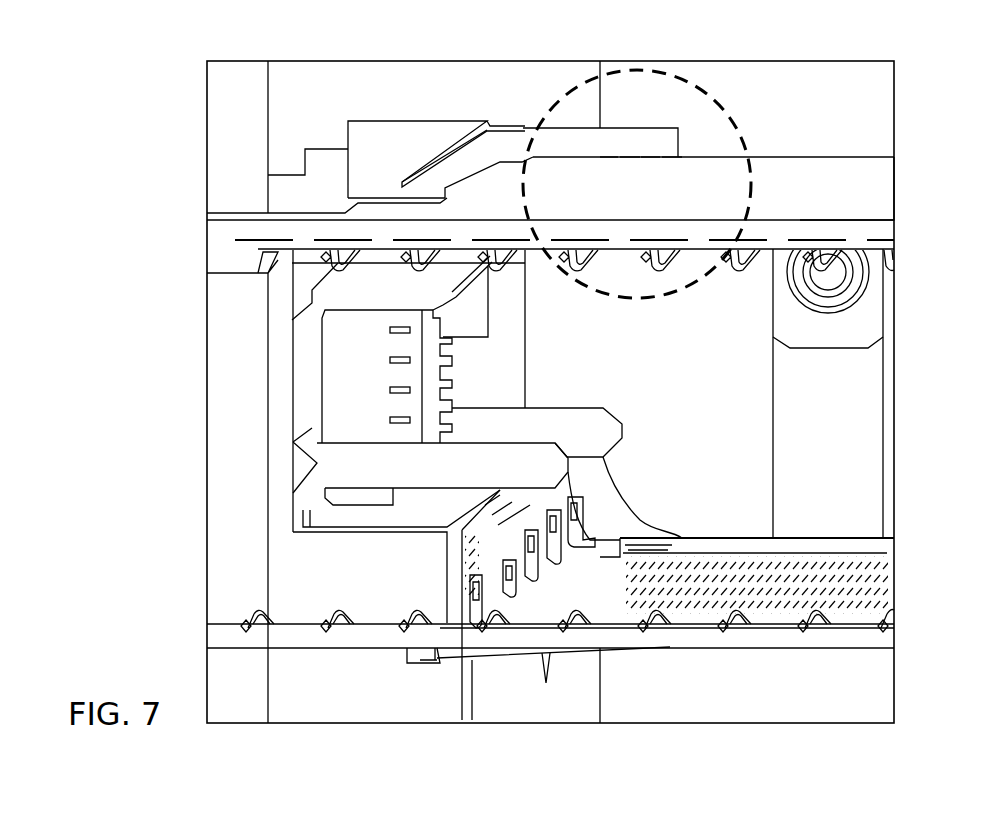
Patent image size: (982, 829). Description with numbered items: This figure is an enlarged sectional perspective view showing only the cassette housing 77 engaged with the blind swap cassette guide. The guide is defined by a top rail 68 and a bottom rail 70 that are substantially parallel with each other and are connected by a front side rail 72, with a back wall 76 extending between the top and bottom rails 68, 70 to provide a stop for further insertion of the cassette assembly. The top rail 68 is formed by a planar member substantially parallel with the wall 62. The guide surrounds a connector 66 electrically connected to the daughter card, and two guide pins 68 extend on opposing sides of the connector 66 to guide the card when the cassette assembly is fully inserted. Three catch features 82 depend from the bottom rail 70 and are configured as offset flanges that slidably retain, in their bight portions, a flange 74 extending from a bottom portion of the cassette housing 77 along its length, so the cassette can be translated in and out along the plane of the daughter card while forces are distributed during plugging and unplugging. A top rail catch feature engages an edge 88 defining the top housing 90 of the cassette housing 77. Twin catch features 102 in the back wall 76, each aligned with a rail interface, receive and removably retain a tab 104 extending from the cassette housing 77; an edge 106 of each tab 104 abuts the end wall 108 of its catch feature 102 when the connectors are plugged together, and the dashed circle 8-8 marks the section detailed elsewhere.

The wall 62 is at (577, 653).
The connector 66 is at (352, 358).
The top rail 68 is at (445, 125).
The bottom rail 70 is at (288, 607).
The front side rail 72 is at (273, 518).
The flange 74 is at (483, 622).
The back wall 76 is at (608, 155).
The cassette housing 77 is at (770, 183).
The catch feature 82 is at (524, 595).
The edge 88 is at (352, 208).
The top housing 90 is at (870, 177).
The catch feature 102 is at (630, 155).
The tab 104 is at (598, 152).
The edge 106 is at (650, 155).
The end wall 108 is at (672, 155).
The section line 8-8 is at (628, 68).